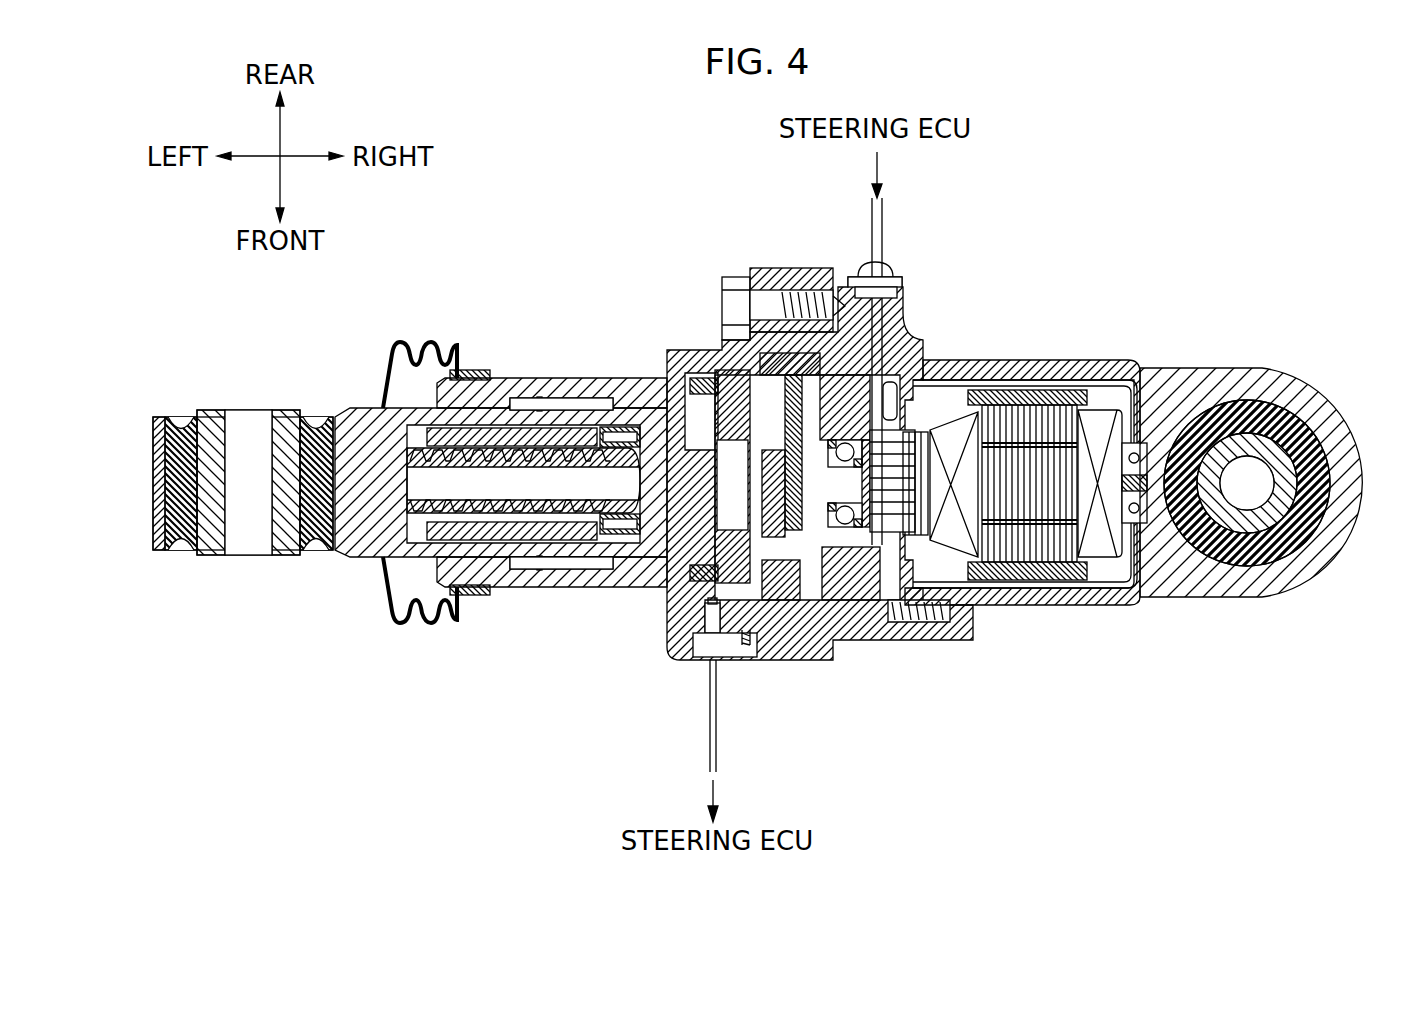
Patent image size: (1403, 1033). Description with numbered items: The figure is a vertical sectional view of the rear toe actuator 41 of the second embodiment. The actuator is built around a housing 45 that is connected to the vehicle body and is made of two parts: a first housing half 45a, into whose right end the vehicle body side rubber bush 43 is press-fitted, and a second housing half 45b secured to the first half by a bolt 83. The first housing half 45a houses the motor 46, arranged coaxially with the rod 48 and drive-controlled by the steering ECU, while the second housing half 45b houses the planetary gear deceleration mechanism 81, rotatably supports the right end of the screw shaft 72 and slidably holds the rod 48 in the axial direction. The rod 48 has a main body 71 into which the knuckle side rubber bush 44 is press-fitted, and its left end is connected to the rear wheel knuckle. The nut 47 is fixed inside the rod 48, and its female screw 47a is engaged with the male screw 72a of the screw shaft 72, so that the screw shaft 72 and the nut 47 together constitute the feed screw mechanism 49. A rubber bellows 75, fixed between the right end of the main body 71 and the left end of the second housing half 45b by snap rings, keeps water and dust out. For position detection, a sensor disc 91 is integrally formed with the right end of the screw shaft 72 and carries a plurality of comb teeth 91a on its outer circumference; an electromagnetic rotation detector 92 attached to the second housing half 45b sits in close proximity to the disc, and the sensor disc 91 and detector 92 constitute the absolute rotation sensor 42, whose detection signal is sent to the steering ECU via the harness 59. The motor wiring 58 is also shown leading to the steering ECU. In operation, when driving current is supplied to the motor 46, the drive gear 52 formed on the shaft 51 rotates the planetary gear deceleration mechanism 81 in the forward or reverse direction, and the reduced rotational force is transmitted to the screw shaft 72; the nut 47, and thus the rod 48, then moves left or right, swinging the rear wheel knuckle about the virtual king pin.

The rear toe actuator 41 is at (1138, 223).
The absolute rotation sensor 42 is at (703, 668).
The vehicle body side rubber bush 43 is at (1322, 482).
The knuckle side rubber bush 44 is at (216, 556).
The housing 45 is at (1026, 360).
The first housing half 45a is at (1168, 368).
The second housing half 45b is at (607, 584).
The motor 46 is at (1033, 595).
The nut 47 is at (545, 448).
The female screw 47a is at (535, 408).
The rod 48 is at (340, 557).
The feed screw mechanism 49 is at (648, 300).
The shaft 51 is at (850, 472).
The drive gear 52 is at (836, 530).
The motor wiring 58 is at (882, 232).
The harness 59 is at (720, 728).
The main body 71 is at (160, 470).
The screw shaft 72 is at (655, 448).
The male screw 72a is at (520, 522).
The rubber bellows 75 is at (402, 345).
The planetary gear deceleration mechanism 81 is at (815, 352).
The bolt 83 is at (728, 283).
The sensor disc 91 is at (725, 372).
The comb teeth 91a is at (707, 378).
The electromagnetic rotation detector 92 is at (725, 660).